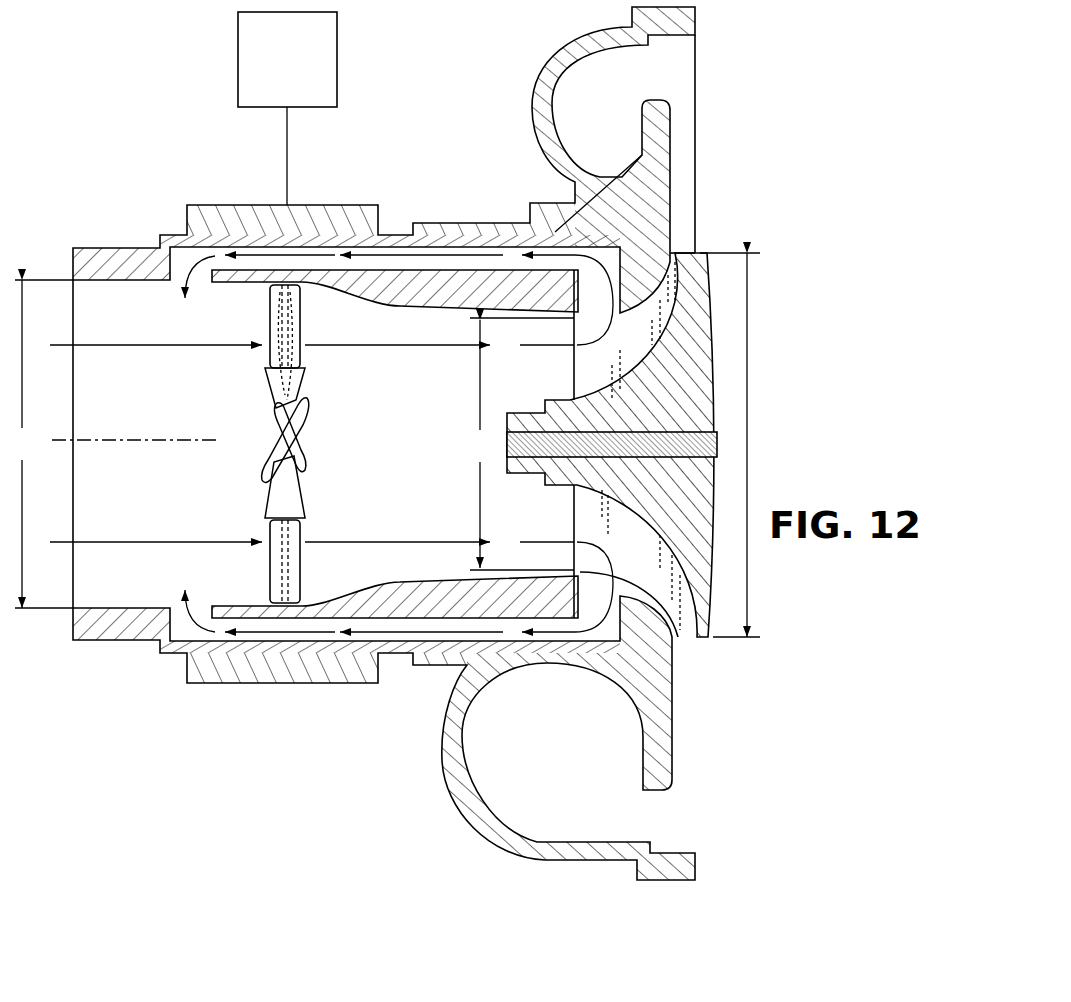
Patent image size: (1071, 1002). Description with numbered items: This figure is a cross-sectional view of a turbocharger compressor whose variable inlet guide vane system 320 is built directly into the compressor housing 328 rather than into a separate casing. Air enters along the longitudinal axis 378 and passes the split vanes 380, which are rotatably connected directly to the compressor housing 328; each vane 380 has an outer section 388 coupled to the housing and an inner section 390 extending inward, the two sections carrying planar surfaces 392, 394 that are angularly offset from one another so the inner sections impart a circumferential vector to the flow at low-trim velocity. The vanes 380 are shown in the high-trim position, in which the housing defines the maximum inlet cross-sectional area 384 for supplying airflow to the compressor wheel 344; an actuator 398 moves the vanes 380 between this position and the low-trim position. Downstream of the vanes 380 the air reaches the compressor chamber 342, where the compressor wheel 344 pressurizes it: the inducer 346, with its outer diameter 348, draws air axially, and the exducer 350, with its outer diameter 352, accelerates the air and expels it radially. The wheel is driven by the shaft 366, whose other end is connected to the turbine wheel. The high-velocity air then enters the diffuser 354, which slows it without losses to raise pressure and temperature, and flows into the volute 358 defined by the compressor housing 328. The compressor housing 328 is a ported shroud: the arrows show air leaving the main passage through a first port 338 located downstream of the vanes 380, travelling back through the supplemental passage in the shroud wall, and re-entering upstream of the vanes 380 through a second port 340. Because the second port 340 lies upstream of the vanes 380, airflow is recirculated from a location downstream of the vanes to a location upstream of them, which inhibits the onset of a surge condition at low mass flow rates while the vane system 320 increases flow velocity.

The VIGV system 320 is at (108, 742).
The compressor housing 328 is at (115, 247).
The first port 338 is at (587, 577).
The second port 340 is at (172, 620).
The compressor chamber 342 is at (660, 632).
The compressor wheel 344 is at (686, 643).
The inducer 346 is at (572, 365).
The outer diameter of inducer 348 is at (480, 444).
The exducer 350 is at (698, 233).
The outer diameter of exducer 352 is at (750, 282).
The diffuser 354 is at (686, 752).
The volute 358 is at (585, 861).
The shaft 366 is at (692, 432).
The longitudinal axis 378 is at (133, 437).
The vane 380 is at (290, 447).
The maximum inlet cross-sectional area 384 is at (38, 444).
The outer section 388 is at (272, 302).
The inner section 390 is at (265, 378).
The planar surface of outer section 392 is at (292, 288).
The planar surface of inner section 394 is at (300, 375).
The actuator 398 is at (337, 62).